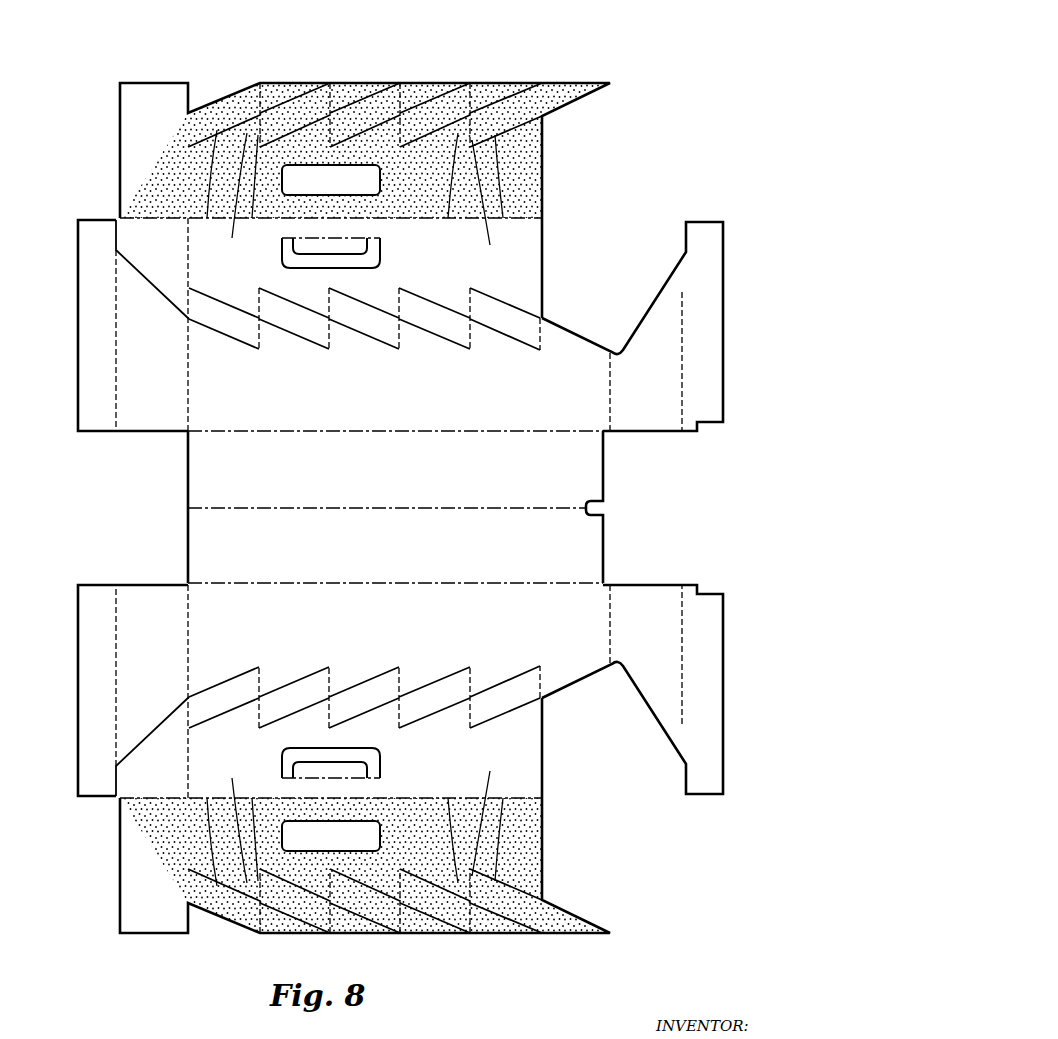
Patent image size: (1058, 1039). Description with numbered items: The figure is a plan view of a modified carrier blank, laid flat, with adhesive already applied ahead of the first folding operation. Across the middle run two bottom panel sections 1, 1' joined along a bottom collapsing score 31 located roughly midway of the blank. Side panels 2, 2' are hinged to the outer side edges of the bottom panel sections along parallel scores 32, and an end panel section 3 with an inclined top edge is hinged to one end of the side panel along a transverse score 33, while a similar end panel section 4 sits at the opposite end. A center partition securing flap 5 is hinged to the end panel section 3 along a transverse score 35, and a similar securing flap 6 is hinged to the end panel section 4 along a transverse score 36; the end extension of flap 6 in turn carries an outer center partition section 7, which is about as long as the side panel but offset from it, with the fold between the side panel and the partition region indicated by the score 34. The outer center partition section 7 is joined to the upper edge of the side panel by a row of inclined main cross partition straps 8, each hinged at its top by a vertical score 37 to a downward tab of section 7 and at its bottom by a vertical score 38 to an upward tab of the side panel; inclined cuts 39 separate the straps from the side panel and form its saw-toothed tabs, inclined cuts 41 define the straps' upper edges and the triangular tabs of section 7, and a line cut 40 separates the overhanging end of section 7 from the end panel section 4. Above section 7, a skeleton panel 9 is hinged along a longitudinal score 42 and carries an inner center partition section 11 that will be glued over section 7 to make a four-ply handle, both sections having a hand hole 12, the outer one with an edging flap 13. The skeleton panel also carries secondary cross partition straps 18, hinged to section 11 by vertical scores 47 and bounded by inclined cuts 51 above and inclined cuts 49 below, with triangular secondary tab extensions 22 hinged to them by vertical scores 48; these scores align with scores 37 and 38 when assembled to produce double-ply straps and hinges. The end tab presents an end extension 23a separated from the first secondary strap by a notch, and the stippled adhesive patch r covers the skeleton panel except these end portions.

The bottom panel section 1 is at (395, 507).
The bottom panel section 1' is at (392, 535).
The side panel 2 is at (419, 324).
The side panel 2' is at (391, 602).
The end panel section 3 is at (652, 370).
The end panel section 4 is at (133, 325).
The center partition securing flap 5 is at (704, 335).
The center partition securing flap 6 is at (92, 365).
The outer center partition section 7 is at (563, 249).
The main cross partition strap 8 is at (546, 302).
The skeleton panel 9 is at (365, 200).
The inner center partition section 11 is at (552, 163).
The hand hole 12 is at (312, 255).
The edging flap 13 is at (335, 252).
The secondary cross partition strap 18 is at (420, 77).
The secondary tab extension 22 is at (458, 51).
The end extension 23a is at (113, 95).
The bottom collapsing score 31 is at (486, 498).
The score 32 is at (482, 445).
The transverse score 33 is at (590, 410).
The fold line 34 is at (174, 345).
The transverse score 35 is at (672, 325).
The transverse score 36 is at (132, 337).
The vertical score 37 is at (330, 273).
The vertical score 38 is at (409, 368).
The inclined cut 39 is at (375, 366).
The line cut 40 is at (142, 265).
The inclined cut 41 is at (360, 274).
The longitudinal score 42 is at (399, 226).
The vertical score 47 is at (292, 203).
The vertical score 48 is at (399, 66).
The inclined cut 49 is at (408, 55).
The inclined cut 51 is at (368, 227).
The adhesive patch r is at (113, 186).